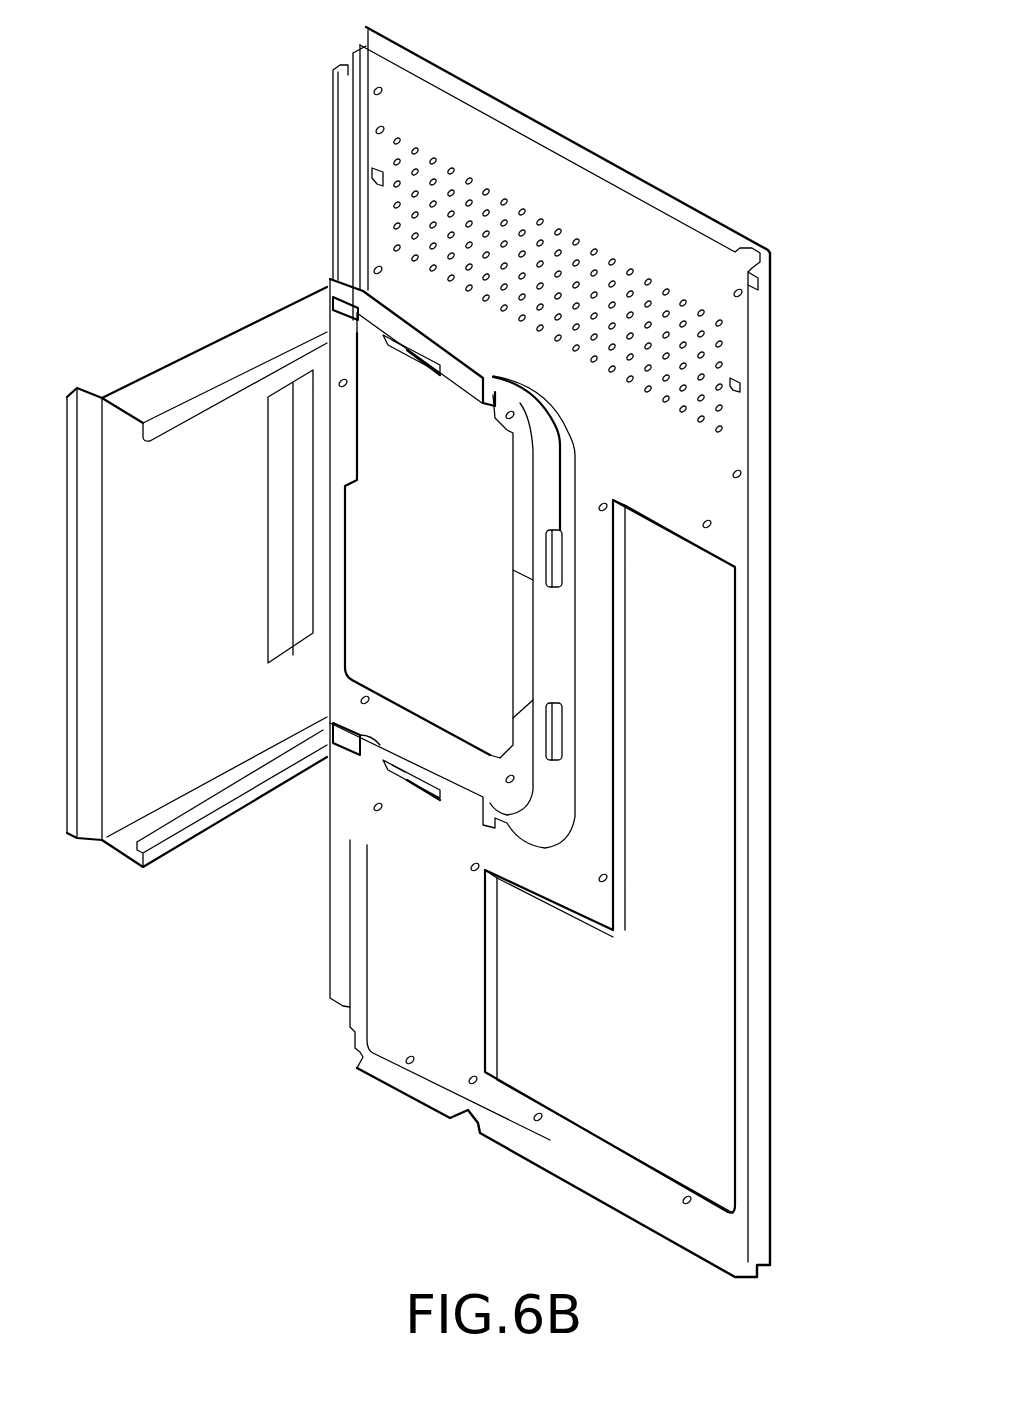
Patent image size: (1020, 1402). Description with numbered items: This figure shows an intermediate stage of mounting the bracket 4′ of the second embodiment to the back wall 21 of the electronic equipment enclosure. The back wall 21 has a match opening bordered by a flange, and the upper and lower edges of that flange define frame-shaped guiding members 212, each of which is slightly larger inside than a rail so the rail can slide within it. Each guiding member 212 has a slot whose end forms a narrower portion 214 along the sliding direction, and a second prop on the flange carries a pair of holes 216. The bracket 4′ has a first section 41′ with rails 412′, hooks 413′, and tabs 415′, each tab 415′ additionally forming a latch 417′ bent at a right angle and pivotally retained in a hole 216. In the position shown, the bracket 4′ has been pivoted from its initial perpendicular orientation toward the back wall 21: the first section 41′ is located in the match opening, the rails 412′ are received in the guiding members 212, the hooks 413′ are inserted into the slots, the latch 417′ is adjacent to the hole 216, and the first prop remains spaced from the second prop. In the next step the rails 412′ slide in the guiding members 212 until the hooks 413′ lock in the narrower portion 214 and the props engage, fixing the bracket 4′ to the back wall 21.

The back wall 21 is at (583, 195).
The guiding member 212 is at (370, 328).
The narrower portion 214 is at (427, 370).
The hole 216 is at (613, 503).
The bracket 4′ is at (183, 337).
The first section 41′ is at (383, 723).
The rail 412′ is at (345, 317).
The hook 413′ is at (397, 358).
The tab 415′ is at (523, 540).
The latch 417′ is at (563, 563).